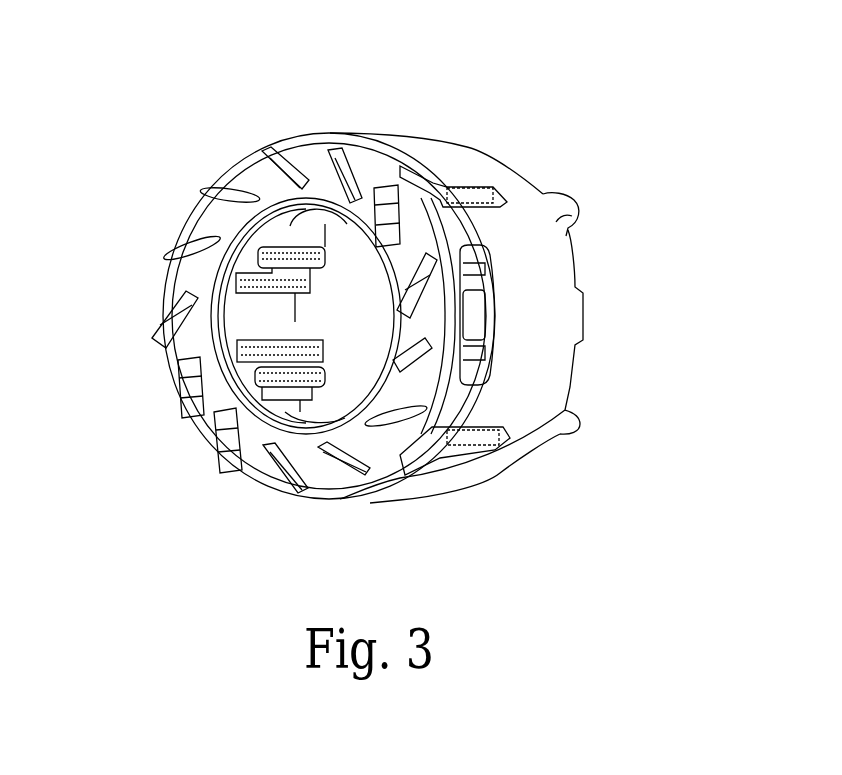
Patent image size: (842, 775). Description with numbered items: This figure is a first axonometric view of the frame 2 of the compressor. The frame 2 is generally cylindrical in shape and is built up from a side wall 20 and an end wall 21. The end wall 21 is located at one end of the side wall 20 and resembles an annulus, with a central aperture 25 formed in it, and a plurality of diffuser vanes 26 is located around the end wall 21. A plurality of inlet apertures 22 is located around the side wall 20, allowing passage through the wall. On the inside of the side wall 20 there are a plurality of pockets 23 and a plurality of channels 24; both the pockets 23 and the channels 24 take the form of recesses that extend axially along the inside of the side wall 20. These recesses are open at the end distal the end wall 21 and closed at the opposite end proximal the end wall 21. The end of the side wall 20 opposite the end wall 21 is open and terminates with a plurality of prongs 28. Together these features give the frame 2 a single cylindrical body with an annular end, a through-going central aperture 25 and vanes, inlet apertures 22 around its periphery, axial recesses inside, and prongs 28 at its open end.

The frame 2 is at (156, 102).
The side wall 20 is at (413, 497).
The end wall 21 is at (257, 465).
The inlet apertures 22 is at (423, 175).
The pockets 23 is at (272, 240).
The channels 24 is at (222, 343).
The central aperture 25 is at (355, 285).
The diffuser vanes 26 is at (343, 172).
The prongs 28 is at (579, 206).